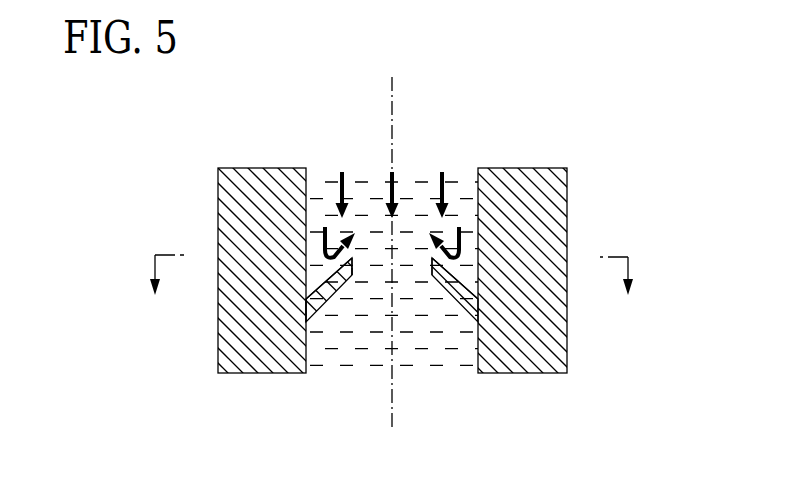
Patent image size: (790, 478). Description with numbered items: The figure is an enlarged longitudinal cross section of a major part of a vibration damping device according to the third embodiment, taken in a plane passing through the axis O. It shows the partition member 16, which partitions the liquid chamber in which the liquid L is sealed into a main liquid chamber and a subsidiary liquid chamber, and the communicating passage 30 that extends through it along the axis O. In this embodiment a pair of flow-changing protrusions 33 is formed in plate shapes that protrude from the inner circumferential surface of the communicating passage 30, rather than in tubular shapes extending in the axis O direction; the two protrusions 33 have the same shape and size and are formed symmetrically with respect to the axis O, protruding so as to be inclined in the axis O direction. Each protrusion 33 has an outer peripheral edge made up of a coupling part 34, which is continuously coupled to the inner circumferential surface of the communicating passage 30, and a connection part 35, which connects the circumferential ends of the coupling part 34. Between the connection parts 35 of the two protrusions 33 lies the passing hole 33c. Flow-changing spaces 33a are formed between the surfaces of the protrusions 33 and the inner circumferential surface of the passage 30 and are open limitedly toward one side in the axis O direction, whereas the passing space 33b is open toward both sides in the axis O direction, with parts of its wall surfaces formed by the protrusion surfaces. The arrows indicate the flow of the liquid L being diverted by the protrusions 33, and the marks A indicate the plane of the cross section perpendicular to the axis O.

The partition member 16 is at (580, 315).
The communicating passage 30 is at (478, 340).
The flow-changing protrusion 33 is at (340, 289).
The flow-changing space 33a is at (327, 264).
The passing space 33b is at (407, 270).
The passing hole 33c is at (353, 268).
The coupling part 34 is at (307, 299).
The connection part 35 is at (353, 275).
The axis O is at (393, 101).
The liquid L is at (473, 252).
The section line A- A is at (392, 278).